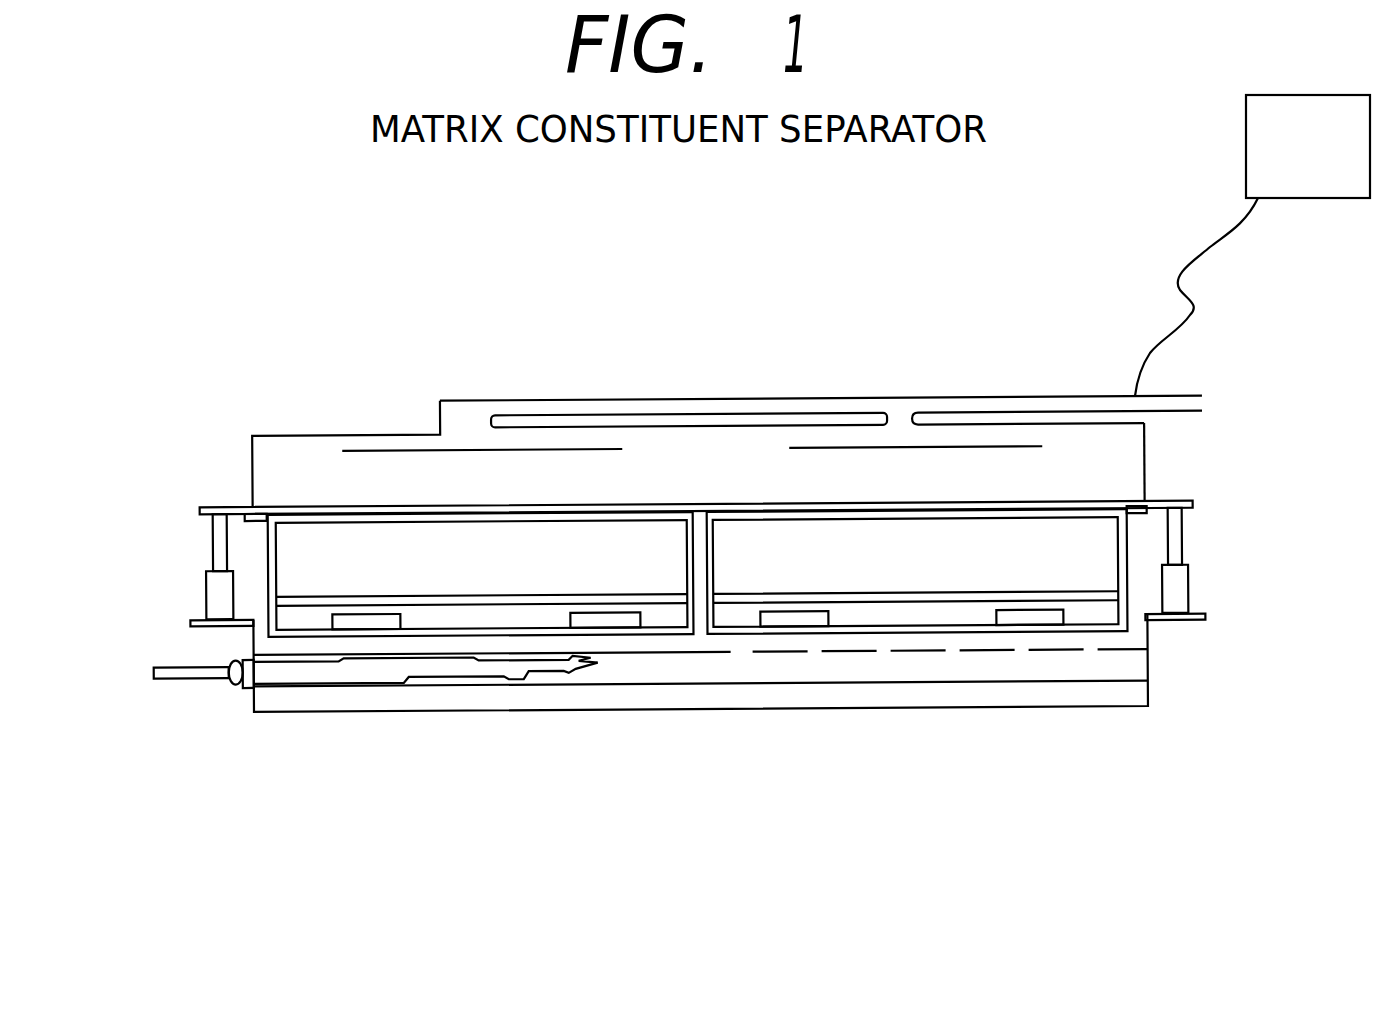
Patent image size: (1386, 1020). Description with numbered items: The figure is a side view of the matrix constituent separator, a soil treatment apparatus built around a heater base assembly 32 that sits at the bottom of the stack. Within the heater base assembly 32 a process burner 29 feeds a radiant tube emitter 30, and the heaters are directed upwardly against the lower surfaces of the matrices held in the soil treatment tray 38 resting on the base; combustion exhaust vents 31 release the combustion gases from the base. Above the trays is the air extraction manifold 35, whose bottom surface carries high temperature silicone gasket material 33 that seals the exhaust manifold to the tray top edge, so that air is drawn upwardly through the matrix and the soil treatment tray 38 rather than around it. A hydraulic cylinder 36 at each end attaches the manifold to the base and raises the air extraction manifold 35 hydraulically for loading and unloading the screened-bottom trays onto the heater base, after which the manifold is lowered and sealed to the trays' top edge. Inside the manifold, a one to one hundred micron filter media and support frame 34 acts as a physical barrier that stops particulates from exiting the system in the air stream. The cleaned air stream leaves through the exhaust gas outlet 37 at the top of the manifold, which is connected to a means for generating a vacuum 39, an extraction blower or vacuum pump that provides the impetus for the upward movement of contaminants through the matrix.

The process burner 29 is at (186, 680).
The radiant tube emitter 30 is at (960, 675).
The combustion exhaust vents 31 is at (1047, 652).
The heater base assembly 32 is at (330, 715).
The high temperature silicone gasket material 33 is at (303, 505).
The filter media and support frame 34 is at (387, 451).
The air extraction manifold 35 is at (1147, 470).
The hydraulic cylinder 36 is at (1190, 588).
The exhaust gas outlet 37 is at (1058, 400).
The soil treatment tray 38 is at (733, 635).
The means for generating a vacuum 39 is at (1255, 120).